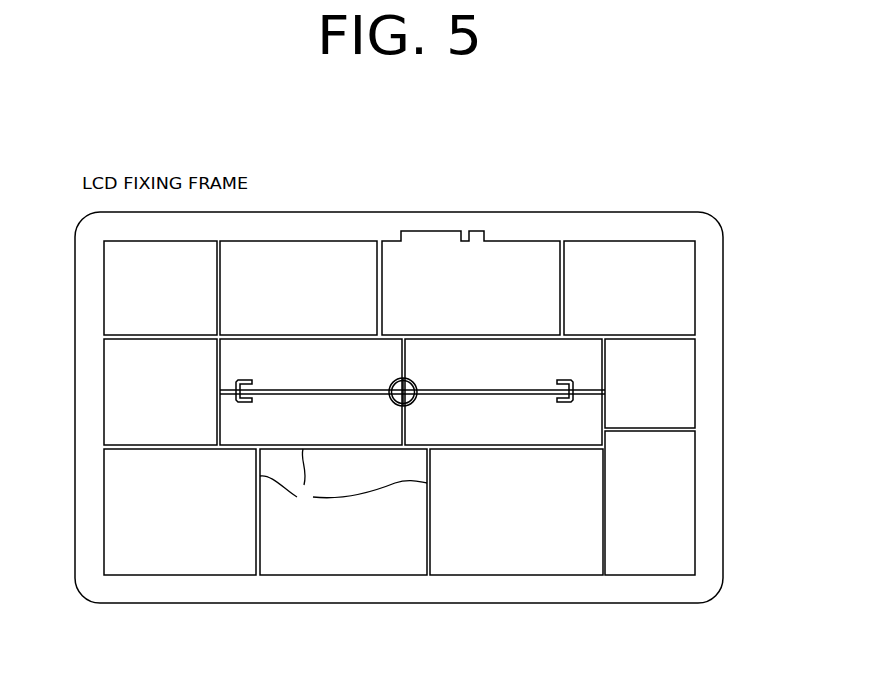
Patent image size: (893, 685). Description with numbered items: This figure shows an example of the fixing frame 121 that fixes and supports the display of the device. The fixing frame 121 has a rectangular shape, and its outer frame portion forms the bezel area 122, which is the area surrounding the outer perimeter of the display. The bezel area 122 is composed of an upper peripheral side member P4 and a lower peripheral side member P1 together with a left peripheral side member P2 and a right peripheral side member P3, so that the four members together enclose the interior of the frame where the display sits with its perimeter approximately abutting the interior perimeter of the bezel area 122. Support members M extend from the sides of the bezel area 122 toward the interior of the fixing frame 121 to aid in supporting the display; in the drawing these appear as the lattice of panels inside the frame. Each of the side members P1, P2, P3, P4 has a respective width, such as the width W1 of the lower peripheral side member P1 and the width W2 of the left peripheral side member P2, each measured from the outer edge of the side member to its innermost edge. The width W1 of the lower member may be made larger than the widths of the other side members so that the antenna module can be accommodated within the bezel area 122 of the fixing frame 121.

The fixing frame 121 is at (722, 221).
The bezel area 122 is at (703, 515).
The support members M is at (343, 479).
The width of the lower member W1 is at (564, 546).
The width of the side member W2 is at (135, 361).
The lower peripheral side member P1 is at (394, 588).
The left peripheral side member P2 is at (103, 415).
The right peripheral side member P3 is at (721, 415).
The upper peripheral side member P4 is at (334, 230).